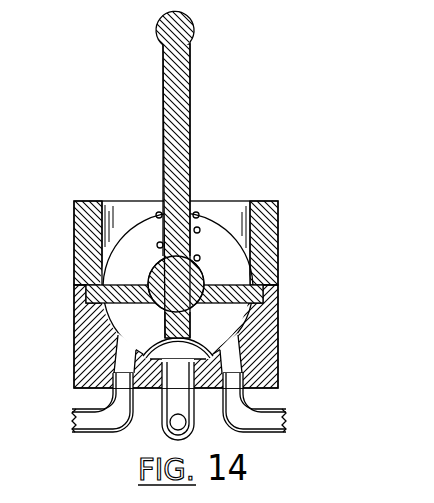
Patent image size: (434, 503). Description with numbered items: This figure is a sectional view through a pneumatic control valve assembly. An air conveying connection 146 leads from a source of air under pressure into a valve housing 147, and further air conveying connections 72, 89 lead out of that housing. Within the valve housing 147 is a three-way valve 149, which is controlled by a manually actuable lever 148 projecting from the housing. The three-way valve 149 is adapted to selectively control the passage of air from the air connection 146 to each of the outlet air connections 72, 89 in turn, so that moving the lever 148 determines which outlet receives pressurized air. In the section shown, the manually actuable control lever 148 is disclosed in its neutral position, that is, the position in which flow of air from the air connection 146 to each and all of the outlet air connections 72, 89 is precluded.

The valve housing 147 is at (74, 206).
The manually actuable lever 148 is at (183, 72).
The three-way valve 149 is at (199, 345).
The air conveying connection 146 is at (185, 425).
The air conveying connection 72 is at (96, 425).
The air conveying connection 89 is at (288, 409).